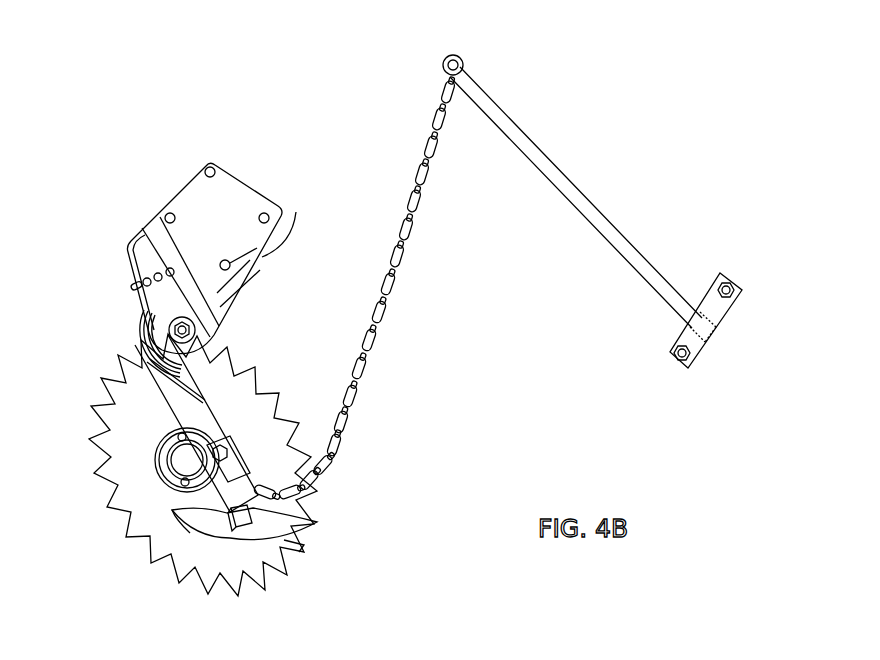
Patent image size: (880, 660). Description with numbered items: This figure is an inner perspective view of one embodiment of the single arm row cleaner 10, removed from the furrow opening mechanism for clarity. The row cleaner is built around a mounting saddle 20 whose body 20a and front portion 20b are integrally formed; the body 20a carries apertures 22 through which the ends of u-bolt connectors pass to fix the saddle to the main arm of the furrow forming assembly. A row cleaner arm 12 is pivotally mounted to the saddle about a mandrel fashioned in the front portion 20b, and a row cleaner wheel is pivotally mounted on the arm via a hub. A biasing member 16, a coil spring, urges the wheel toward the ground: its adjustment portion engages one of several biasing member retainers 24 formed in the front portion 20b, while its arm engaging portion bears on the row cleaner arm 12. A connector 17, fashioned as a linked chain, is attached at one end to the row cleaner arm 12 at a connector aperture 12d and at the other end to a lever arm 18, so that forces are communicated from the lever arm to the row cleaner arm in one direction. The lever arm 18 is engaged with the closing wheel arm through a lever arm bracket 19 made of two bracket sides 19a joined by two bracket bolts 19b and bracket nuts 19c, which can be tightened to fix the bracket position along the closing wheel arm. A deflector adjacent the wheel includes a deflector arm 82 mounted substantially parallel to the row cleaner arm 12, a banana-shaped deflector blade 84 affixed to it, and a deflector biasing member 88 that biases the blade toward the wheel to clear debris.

The single arm row cleaner 10 is at (120, 127).
The row cleaner arm 12 is at (170, 407).
The connector aperture 12d is at (180, 546).
The biasing member 16 is at (150, 326).
The connector 17 is at (427, 137).
The lever arm 18 is at (605, 218).
The lever arm bracket 19 is at (730, 360).
The bracket sides 19a is at (718, 308).
The bracket bolts 19b is at (670, 348).
The bracket nuts 19c is at (728, 273).
The mounting saddle 20 is at (120, 222).
The body 20a is at (211, 258).
The front portion 20b is at (143, 257).
The apertures 22 is at (211, 167).
The biasing member retainers 24 is at (133, 287).
The deflector arm 82 is at (243, 517).
The deflector blade 84 is at (297, 550).
The deflector biasing member 88 is at (245, 467).